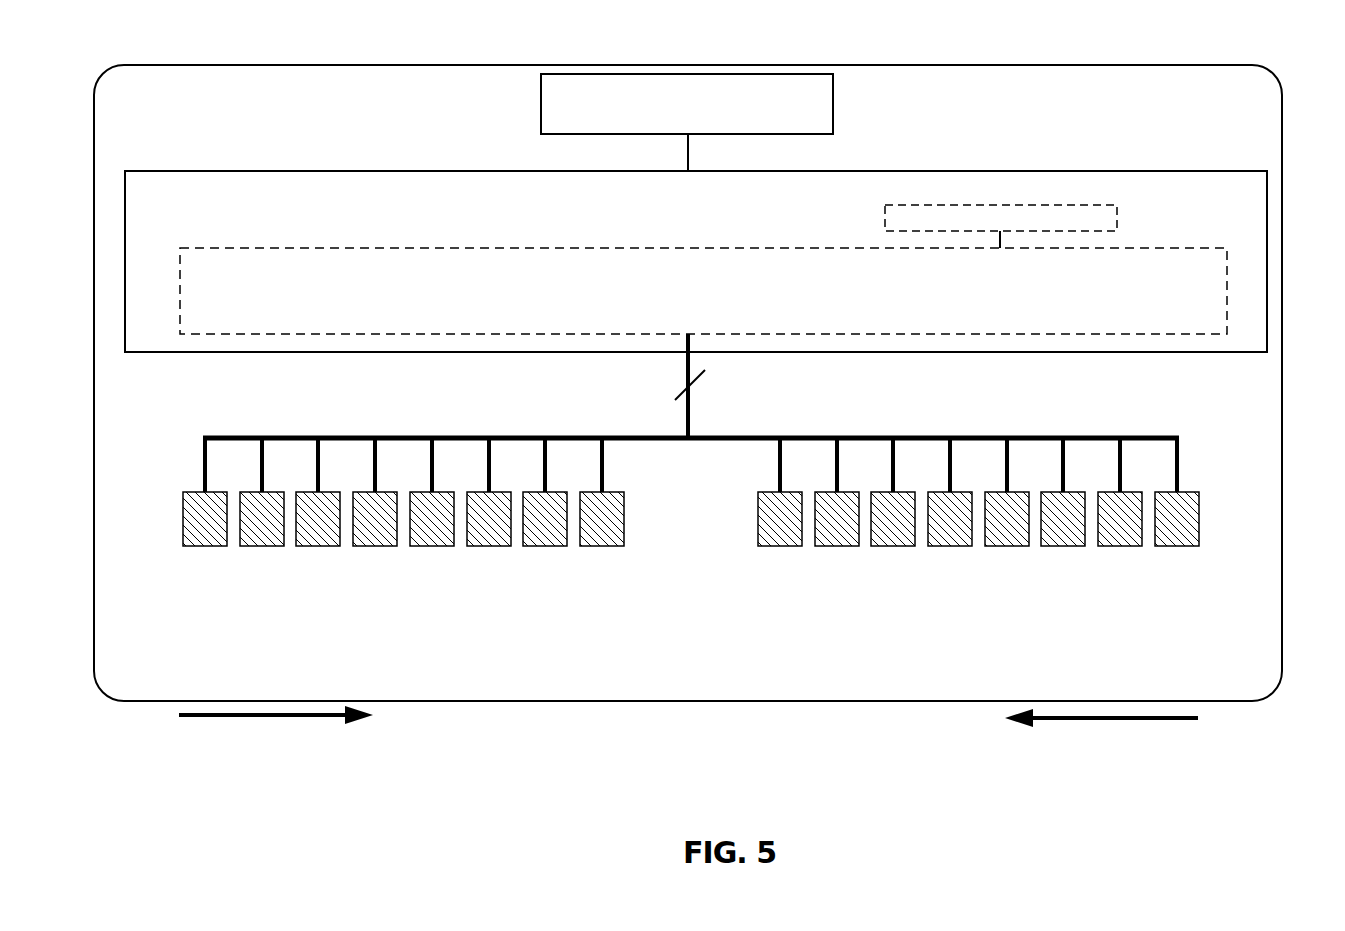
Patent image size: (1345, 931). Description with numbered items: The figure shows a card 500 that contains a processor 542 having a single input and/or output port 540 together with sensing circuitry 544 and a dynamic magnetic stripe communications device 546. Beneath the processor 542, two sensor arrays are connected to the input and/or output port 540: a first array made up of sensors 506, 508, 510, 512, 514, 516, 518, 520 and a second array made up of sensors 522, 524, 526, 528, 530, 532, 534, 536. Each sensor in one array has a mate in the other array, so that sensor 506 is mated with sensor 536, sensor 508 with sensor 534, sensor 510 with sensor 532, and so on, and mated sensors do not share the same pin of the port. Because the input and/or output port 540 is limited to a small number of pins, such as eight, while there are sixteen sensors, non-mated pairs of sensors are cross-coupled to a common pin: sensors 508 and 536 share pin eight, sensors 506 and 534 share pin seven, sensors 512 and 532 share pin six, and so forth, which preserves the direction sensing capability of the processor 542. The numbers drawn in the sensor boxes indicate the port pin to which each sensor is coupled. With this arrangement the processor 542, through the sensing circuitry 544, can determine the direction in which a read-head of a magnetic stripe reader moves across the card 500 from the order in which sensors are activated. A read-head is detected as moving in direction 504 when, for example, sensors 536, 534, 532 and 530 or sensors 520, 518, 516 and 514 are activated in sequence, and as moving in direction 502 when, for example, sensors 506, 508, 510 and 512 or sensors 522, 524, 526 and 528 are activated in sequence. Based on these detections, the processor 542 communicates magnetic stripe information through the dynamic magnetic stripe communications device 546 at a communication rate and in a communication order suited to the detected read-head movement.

The card 500 is at (718, 383).
The direction 502 is at (235, 718).
The direction 504 is at (1145, 721).
The sensor 506 is at (189, 547).
The sensor 508 is at (250, 547).
The sensor 510 is at (306, 547).
The sensor 512 is at (363, 547).
The sensor 514 is at (420, 547).
The sensor 516 is at (477, 547).
The sensor 518 is at (533, 547).
The sensor 520 is at (590, 547).
The sensor 522 is at (765, 547).
The sensor 524 is at (827, 547).
The sensor 526 is at (888, 547).
The sensor 528 is at (948, 547).
The sensor 530 is at (1009, 547).
The sensor 532 is at (1070, 547).
The sensor 534 is at (1129, 547).
The sensor 536 is at (1191, 547).
The input and/or output port 540 is at (428, 248).
The processor 542 is at (452, 171).
The sensing circuitry 544 is at (1068, 205).
The dynamic magnetic stripe communications device 546 is at (833, 90).